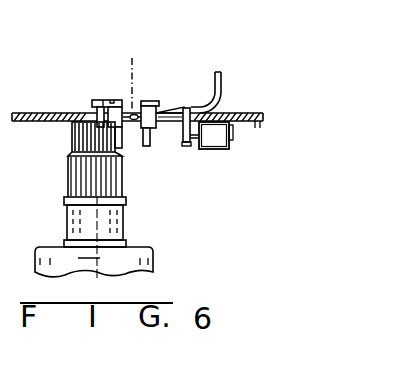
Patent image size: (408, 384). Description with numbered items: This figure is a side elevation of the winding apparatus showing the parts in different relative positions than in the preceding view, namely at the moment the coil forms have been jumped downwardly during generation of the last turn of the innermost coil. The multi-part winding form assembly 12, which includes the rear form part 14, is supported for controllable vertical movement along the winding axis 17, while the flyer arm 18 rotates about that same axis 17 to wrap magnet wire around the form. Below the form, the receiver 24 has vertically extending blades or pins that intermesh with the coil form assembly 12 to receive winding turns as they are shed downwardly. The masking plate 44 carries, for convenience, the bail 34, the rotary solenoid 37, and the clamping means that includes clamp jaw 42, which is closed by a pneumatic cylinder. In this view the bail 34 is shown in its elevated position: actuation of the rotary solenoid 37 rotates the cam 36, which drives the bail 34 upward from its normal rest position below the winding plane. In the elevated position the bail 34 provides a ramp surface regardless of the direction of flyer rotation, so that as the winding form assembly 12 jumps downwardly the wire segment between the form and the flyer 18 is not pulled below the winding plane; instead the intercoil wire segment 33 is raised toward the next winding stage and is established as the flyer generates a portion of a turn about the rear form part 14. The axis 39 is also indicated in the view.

The winding form assembly 12 is at (111, 78).
The rear form part 14 is at (151, 101).
The winding axis 17 is at (134, 58).
The flyer arm 18 is at (221, 85).
The receiver 24 is at (72, 133).
The intercoil wire segment 33 is at (168, 110).
The bail 34 is at (173, 122).
The cam 36 is at (187, 146).
The rotary solenoid 37 is at (218, 140).
The axis 39 is at (97, 208).
The clamp jaw 42 is at (86, 112).
The masking plate 44 is at (63, 112).